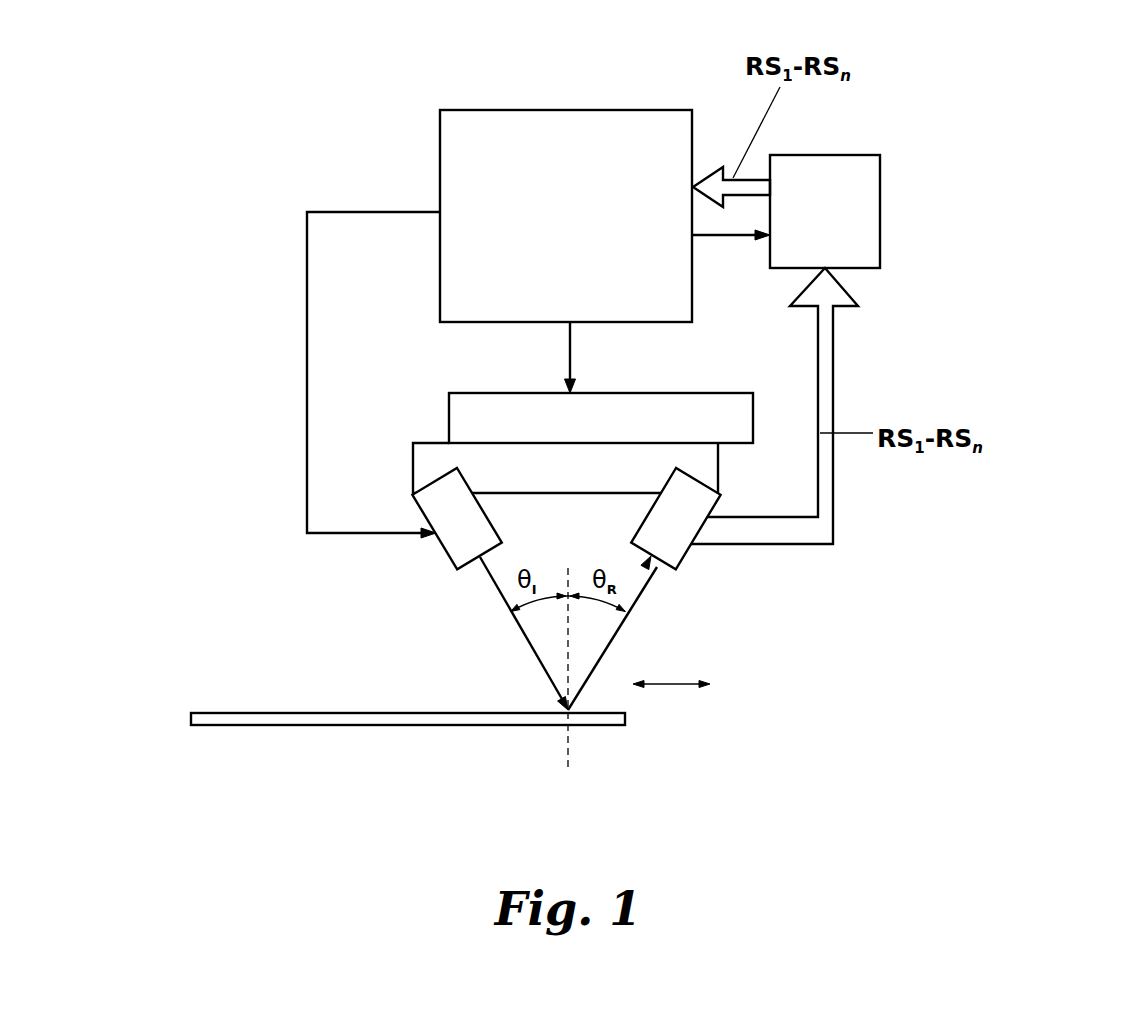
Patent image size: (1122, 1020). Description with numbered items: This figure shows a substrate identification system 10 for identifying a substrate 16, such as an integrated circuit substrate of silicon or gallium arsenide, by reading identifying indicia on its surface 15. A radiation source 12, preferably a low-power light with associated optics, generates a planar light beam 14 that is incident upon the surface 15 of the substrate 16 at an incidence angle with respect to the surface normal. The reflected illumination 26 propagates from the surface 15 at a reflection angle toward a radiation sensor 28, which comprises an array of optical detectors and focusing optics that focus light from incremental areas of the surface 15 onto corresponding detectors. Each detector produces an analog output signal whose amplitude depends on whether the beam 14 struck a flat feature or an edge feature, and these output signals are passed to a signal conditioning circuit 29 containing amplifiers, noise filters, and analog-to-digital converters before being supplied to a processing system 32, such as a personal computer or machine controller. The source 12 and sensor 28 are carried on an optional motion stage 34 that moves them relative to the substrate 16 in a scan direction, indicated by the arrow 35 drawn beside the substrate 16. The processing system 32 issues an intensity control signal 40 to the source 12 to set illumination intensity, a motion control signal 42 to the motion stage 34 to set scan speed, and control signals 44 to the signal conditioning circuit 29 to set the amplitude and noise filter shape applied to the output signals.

The substrate identification system 10 is at (1043, 89).
The radiation source 12 is at (443, 543).
The light beam 14 is at (526, 639).
The surface of the substrate 15 is at (367, 713).
The substrate 16 is at (212, 659).
The reflected illumination 26 is at (619, 612).
The radiation sensor 28 is at (683, 552).
The signal conditioning circuit 29 is at (823, 155).
The processing system 32 is at (605, 110).
The motion stage 34 is at (677, 393).
The stage translation direction 35 is at (677, 684).
The intensity control signal 40 is at (307, 335).
The motion control signal 42 is at (567, 342).
The control signals 44 is at (708, 237).